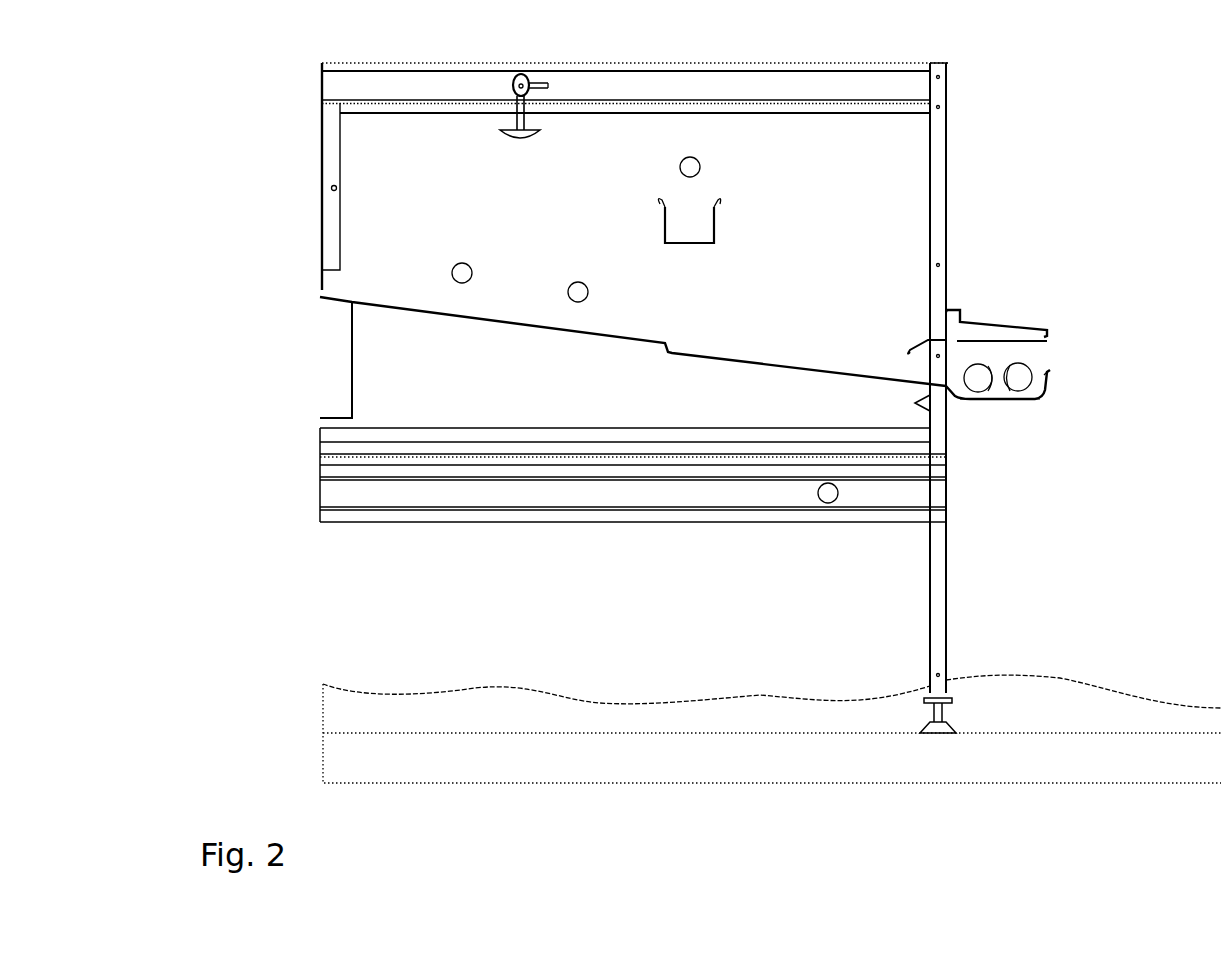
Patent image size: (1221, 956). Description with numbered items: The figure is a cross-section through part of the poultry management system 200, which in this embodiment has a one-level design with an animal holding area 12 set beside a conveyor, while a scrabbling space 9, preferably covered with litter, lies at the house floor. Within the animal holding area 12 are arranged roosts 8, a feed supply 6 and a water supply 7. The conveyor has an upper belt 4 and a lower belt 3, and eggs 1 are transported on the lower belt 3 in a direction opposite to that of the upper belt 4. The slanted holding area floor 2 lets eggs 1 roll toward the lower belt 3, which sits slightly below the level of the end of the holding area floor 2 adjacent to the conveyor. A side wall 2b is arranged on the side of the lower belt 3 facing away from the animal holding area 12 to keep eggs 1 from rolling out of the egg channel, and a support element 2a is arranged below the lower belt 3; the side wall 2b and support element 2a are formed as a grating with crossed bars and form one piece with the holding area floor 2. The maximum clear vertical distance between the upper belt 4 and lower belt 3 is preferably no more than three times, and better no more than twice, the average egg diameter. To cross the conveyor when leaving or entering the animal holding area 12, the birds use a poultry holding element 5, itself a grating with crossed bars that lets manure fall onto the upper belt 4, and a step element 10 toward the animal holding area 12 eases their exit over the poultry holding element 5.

The poultry management system 200 is at (1155, 150).
The eggs 1 is at (1016, 385).
The holding area floor 2 is at (730, 362).
The support element 2a is at (1020, 402).
The side wall 2b is at (1050, 379).
The lower belt 3 is at (1040, 401).
The upper belt 4 is at (1047, 341).
The poultry holding element 5 is at (992, 322).
The feed supply 6 is at (718, 205).
The water supply 7 is at (540, 133).
The roosts 8 is at (570, 302).
The scrabbling space 9 is at (1060, 697).
The step element 10 is at (922, 338).
The animal holding area 12 is at (486, 218).